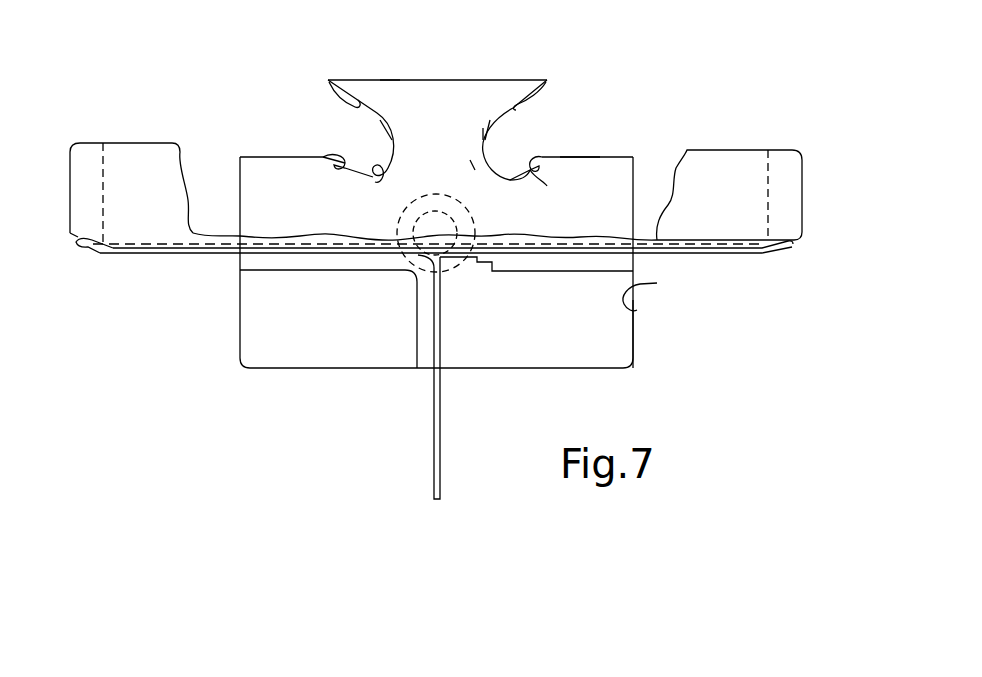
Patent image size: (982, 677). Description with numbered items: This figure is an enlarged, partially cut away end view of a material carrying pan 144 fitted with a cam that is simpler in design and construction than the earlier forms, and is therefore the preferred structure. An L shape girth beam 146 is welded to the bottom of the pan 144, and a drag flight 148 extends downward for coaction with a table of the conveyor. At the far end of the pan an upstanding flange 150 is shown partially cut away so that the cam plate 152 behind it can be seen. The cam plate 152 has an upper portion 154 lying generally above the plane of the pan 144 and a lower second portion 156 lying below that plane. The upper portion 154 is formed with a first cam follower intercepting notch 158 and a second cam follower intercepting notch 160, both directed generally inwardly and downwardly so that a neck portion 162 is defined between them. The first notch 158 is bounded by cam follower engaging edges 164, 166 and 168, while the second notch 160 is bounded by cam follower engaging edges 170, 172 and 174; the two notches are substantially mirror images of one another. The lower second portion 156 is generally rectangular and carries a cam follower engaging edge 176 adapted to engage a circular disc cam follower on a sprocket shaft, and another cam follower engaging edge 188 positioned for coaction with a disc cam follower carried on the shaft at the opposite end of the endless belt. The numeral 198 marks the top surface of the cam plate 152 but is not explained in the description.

The material carrying pan 144 is at (203, 255).
The L shape girth beam 146 is at (337, 263).
The drag flight 148 is at (442, 418).
The upstanding flange 150 is at (722, 162).
The cam plate 152 is at (479, 72).
The upper portion 154 is at (580, 172).
The lower second portion 156 is at (618, 342).
The first cam follower intercepting notch 158 is at (355, 142).
The second cam follower intercepting notch 160 is at (517, 140).
The neck portion 162 is at (457, 158).
The cam follower engaging edge 164 is at (330, 100).
The cam follower engaging edge 166 is at (400, 184).
The cam follower engaging edge 168 is at (327, 165).
The cam follower engaging edge 170 is at (550, 81).
The cam follower engaging edge 172 is at (483, 132).
The cam follower engaging edge 174 is at (538, 172).
The cam follower engaging edge 176 is at (327, 372).
The cam follower engaging edge 188 is at (662, 295).
The top surface 198 is at (397, 80).